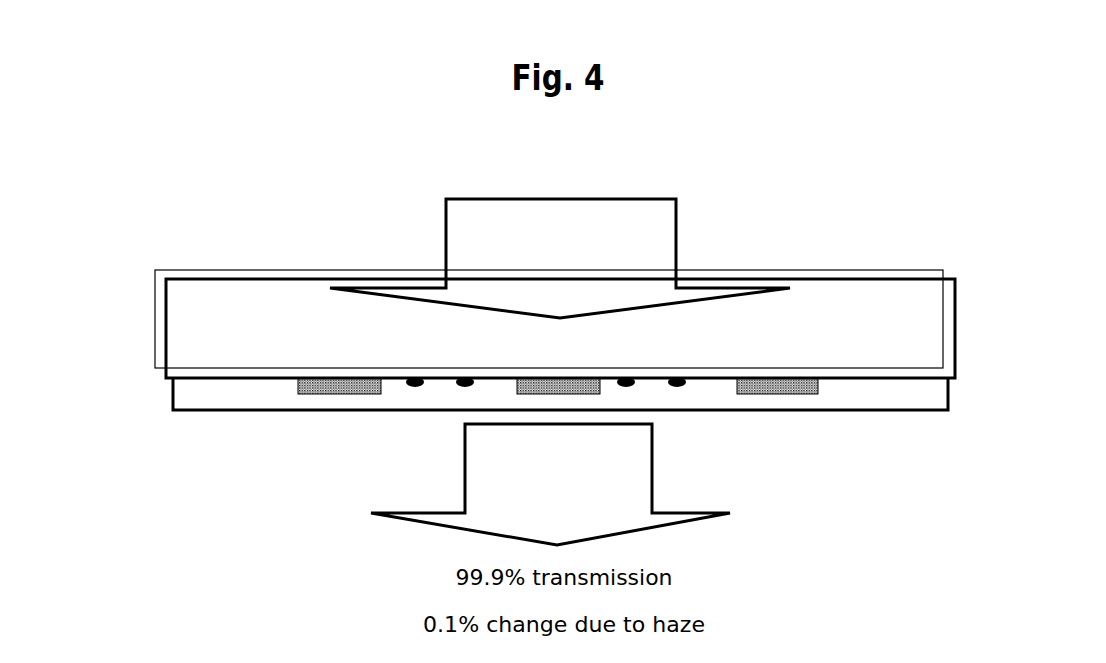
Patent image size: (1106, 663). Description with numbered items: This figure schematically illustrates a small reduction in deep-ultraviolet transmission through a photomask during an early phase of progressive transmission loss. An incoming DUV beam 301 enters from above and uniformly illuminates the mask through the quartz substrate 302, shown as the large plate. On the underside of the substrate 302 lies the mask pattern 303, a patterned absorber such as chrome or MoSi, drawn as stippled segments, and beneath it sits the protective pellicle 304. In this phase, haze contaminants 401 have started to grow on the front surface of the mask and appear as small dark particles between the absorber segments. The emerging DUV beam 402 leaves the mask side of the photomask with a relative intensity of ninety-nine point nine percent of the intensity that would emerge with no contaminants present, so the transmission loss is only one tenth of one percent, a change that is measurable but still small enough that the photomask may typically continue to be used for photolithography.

The incoming DUV beam 301 is at (560, 258).
The substrate 302 is at (950, 316).
The mask pattern 303 is at (785, 386).
The protective pellicle 304 is at (948, 399).
The haze contaminants 401 is at (470, 378).
The DUV beam 402 is at (550, 484).